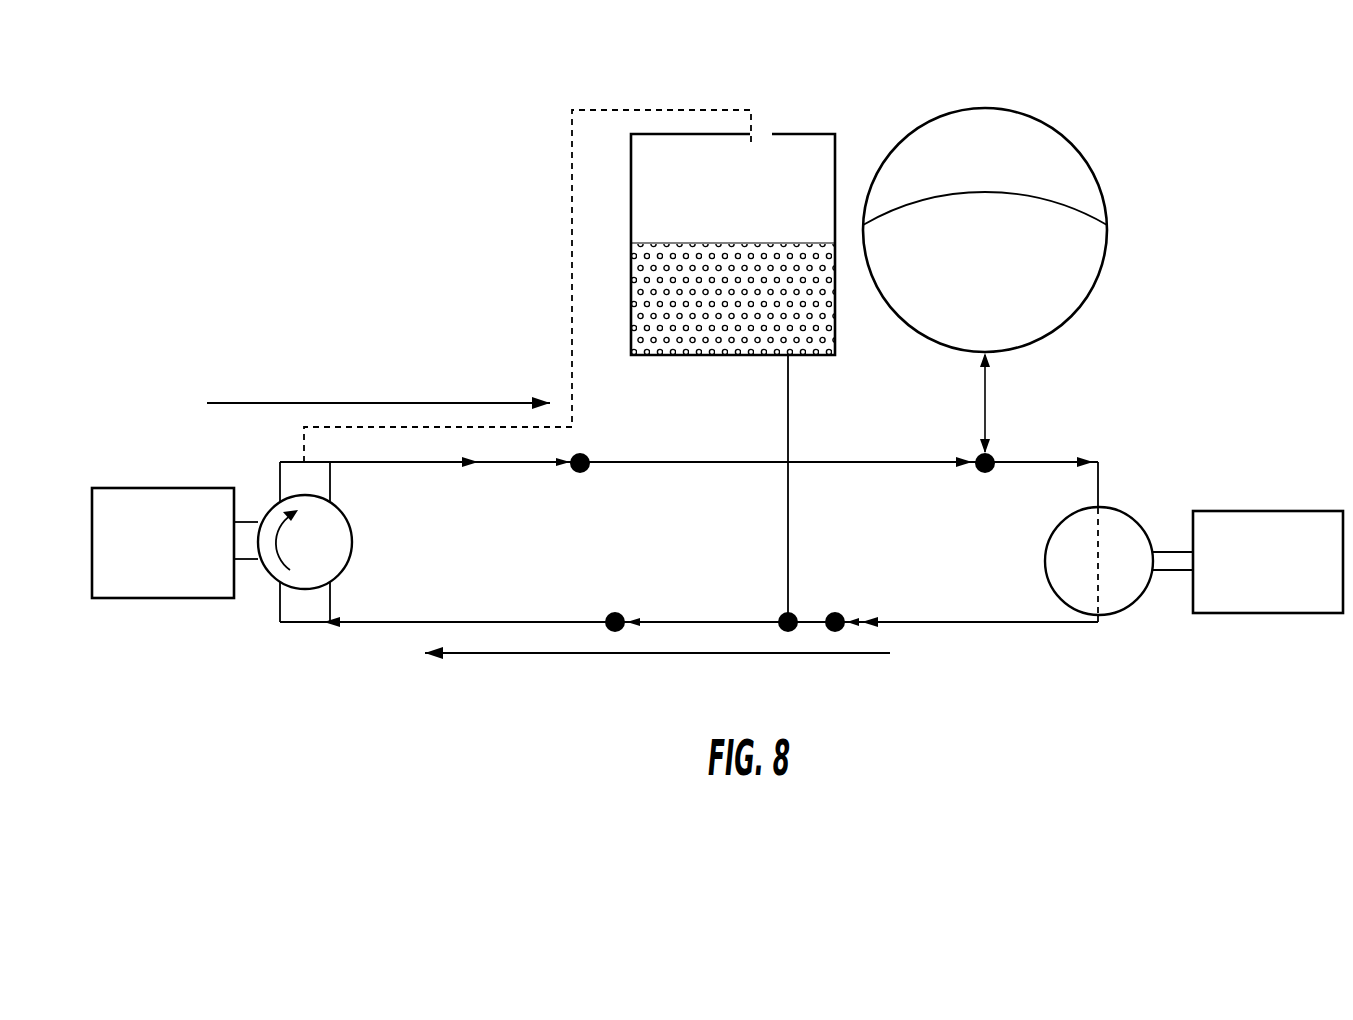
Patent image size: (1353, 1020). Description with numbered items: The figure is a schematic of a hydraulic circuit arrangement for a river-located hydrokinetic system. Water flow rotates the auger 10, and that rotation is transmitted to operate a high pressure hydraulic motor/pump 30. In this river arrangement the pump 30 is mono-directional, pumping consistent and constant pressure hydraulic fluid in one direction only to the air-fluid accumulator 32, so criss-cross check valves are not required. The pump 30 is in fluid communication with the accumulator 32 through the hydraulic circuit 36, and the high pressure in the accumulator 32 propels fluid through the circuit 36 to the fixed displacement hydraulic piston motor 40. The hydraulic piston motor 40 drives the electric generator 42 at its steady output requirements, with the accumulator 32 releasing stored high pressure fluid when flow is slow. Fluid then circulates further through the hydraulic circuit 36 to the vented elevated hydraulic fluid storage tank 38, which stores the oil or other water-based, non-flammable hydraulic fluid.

The auger 10 is at (150, 487).
The hydraulic motor/pump 30 is at (282, 623).
The air-fluid accumulator 32 is at (1068, 140).
The hydraulic circuit 36 is at (703, 462).
The vented elevated hydraulic fluid storage tank 38 is at (787, 134).
The fixed displacement hydraulic piston motor 40 is at (1130, 507).
The electric generator 42 is at (1265, 520).